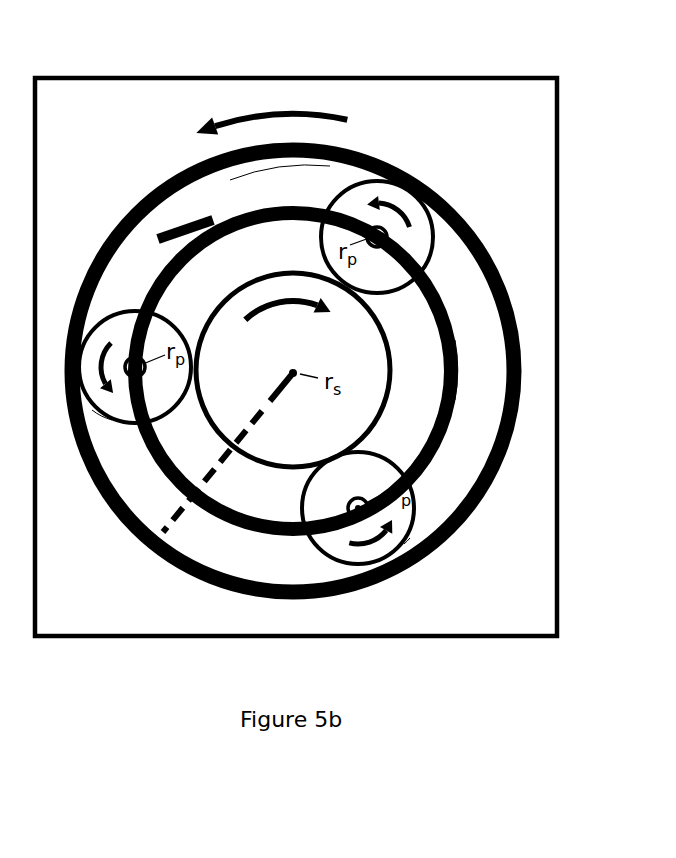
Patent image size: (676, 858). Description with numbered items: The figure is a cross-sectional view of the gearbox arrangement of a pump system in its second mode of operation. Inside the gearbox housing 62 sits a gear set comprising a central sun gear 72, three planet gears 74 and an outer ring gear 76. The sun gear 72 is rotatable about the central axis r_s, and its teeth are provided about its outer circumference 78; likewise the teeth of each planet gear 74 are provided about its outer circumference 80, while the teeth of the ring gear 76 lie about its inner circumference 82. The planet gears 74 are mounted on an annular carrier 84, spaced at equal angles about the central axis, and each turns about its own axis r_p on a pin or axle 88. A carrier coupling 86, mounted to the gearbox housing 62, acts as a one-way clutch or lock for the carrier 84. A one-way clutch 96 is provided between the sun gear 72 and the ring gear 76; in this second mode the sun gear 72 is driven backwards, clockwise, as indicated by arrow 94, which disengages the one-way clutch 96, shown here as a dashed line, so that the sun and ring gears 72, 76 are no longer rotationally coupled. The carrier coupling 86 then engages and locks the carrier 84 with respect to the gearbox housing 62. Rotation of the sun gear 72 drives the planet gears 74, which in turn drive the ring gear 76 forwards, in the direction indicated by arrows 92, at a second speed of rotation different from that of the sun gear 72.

The gearbox housing 62 is at (497, 76).
The sun gear 72 is at (380, 372).
The planet gears 74 is at (132, 330).
The ring gear 76 is at (161, 183).
The outer circumference of the sun gear 78 is at (279, 466).
The outer circumference of the planet gears 80 is at (435, 235).
The inner circumference of the ring gear 82 is at (263, 157).
The annular carrier 84 is at (460, 370).
The carrier coupling 86 is at (177, 230).
The pins or axles 88 is at (133, 372).
The arrows 92 is at (247, 112).
The arrow 94 is at (265, 308).
The one-way clutch 96 is at (265, 398).